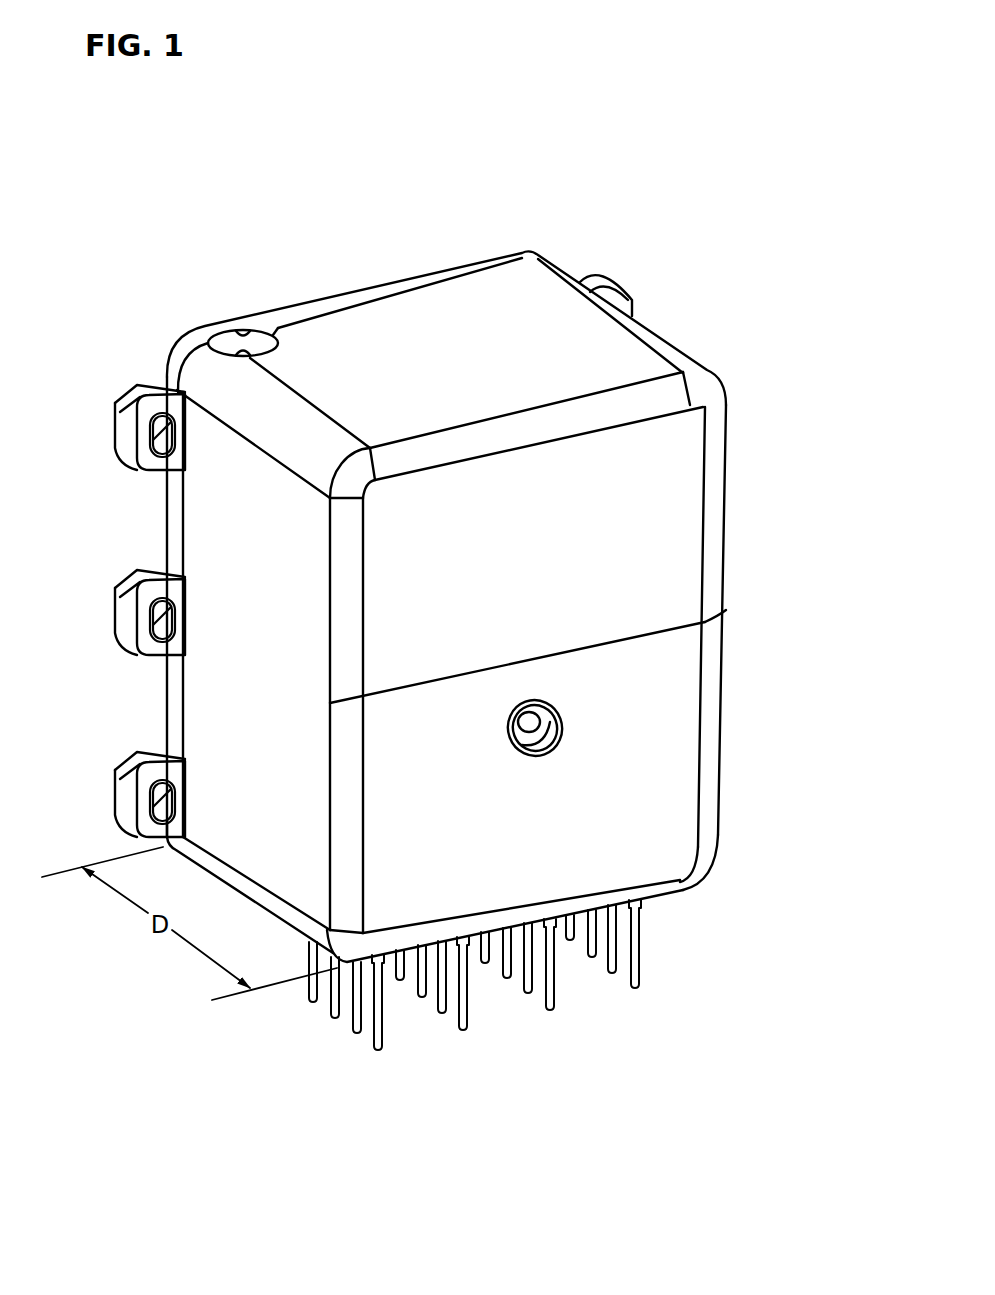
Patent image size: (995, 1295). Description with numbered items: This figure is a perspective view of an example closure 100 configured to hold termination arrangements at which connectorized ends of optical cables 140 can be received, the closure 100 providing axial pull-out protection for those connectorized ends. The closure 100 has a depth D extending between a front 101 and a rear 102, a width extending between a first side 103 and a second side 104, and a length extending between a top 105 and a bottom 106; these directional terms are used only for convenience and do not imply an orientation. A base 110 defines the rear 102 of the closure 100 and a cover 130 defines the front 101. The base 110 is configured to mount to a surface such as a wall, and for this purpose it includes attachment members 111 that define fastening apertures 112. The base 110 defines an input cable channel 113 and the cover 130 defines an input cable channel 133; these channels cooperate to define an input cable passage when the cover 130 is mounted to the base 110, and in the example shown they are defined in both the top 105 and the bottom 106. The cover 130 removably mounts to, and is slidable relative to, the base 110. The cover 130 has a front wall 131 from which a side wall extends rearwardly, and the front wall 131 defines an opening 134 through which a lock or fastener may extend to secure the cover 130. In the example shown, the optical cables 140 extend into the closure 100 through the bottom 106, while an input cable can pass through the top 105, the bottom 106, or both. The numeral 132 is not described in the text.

The closure 100 is at (719, 366).
The front 101 is at (633, 820).
The rear 102 is at (176, 340).
The first side 103 is at (222, 704).
The second side 104 is at (733, 647).
The top 105 is at (387, 342).
The bottom 106 is at (673, 897).
The base 110 is at (418, 275).
The attachment members 111 is at (597, 285).
The fastening apertures 112 is at (158, 448).
The input cable channel 113 is at (248, 335).
The cover 130 is at (730, 548).
The front wall 131 is at (558, 597).
The left face 132 is at (284, 670).
The input cable channel 133 is at (243, 360).
The opening 134 is at (552, 733).
The optical cables 140 is at (643, 987).